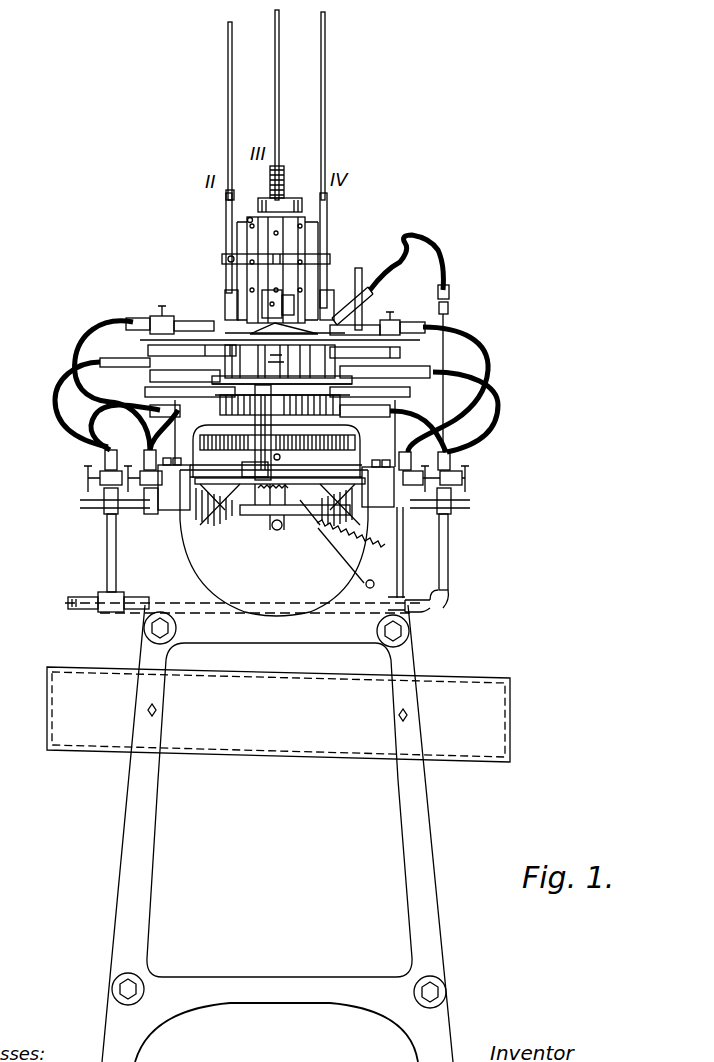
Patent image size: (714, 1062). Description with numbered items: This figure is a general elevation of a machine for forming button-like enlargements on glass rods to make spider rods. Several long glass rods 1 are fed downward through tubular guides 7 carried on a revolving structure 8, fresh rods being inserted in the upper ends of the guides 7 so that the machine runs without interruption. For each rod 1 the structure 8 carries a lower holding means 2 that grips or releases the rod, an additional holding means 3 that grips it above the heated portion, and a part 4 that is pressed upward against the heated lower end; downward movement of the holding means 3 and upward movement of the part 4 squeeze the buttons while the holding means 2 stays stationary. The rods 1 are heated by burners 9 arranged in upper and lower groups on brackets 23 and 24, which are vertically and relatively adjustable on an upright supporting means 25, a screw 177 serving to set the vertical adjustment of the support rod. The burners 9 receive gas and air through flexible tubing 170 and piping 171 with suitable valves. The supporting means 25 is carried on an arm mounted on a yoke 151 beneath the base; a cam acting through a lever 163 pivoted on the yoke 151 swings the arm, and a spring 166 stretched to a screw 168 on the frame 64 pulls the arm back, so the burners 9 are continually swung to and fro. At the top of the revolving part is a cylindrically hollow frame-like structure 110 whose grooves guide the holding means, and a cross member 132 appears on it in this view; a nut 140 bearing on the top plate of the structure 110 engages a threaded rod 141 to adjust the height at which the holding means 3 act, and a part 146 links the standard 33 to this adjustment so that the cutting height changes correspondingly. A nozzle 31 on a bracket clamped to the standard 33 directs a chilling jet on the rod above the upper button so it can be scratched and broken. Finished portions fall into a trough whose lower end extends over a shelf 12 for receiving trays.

The glass rod 1 is at (228, 77).
The holding means 2 is at (282, 370).
The additional holding means 3 is at (272, 305).
The part 4 is at (290, 301).
The guides 7 is at (226, 214).
The structure 8 is at (250, 218).
The heating devices 9 is at (265, 358).
The shelf 12 is at (514, 716).
The bracket 23 is at (232, 330).
The bracket 24 is at (330, 408).
The supporting means 25 is at (255, 418).
The nozzle 31 is at (365, 300).
The standard 33 is at (362, 272).
The frame 64 is at (413, 657).
The frame-like structure 110 is at (308, 240).
The cross bar 132 is at (222, 258).
The nut 140 is at (268, 198).
The threaded rod 141 is at (284, 172).
The part 146 is at (345, 548).
The yoke 151 is at (245, 512).
The lever 163 is at (340, 452).
The spring 166 is at (360, 578).
The screw 168 is at (373, 580).
The flexible tubing 170 is at (80, 330).
The piping 171 is at (107, 557).
The screw 177 is at (266, 515).